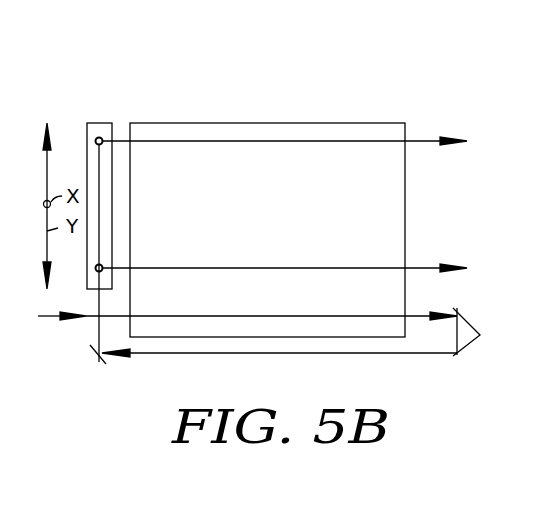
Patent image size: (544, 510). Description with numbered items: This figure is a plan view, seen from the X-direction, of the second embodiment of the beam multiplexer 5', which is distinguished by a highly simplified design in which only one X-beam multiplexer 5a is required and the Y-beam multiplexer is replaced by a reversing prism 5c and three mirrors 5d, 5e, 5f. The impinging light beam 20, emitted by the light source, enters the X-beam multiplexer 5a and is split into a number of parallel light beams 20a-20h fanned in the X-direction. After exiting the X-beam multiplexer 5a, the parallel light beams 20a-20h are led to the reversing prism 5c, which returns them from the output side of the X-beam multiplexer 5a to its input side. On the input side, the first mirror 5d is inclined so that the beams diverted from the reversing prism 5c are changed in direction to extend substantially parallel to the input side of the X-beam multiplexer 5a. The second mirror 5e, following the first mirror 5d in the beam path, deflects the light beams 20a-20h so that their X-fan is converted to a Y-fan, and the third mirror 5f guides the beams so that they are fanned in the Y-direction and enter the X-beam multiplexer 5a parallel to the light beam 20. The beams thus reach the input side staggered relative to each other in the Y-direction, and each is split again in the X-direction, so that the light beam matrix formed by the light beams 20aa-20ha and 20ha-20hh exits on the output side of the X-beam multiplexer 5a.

The beam multiplexer 5' is at (267, 197).
The X-beam multiplexer 5a is at (314, 123).
The second mirror 5e is at (99, 123).
The third mirror 5f is at (99, 250).
The reversing prism 5c is at (458, 354).
The first mirror 5d is at (106, 364).
The light beam 20 is at (52, 318).
The parallel light beams 20a-20h is at (234, 318).
The light beams of the light beam matrix 20aa-20ha is at (428, 141).
The light beams of the light beam matrix 20ha-20hh is at (428, 268).